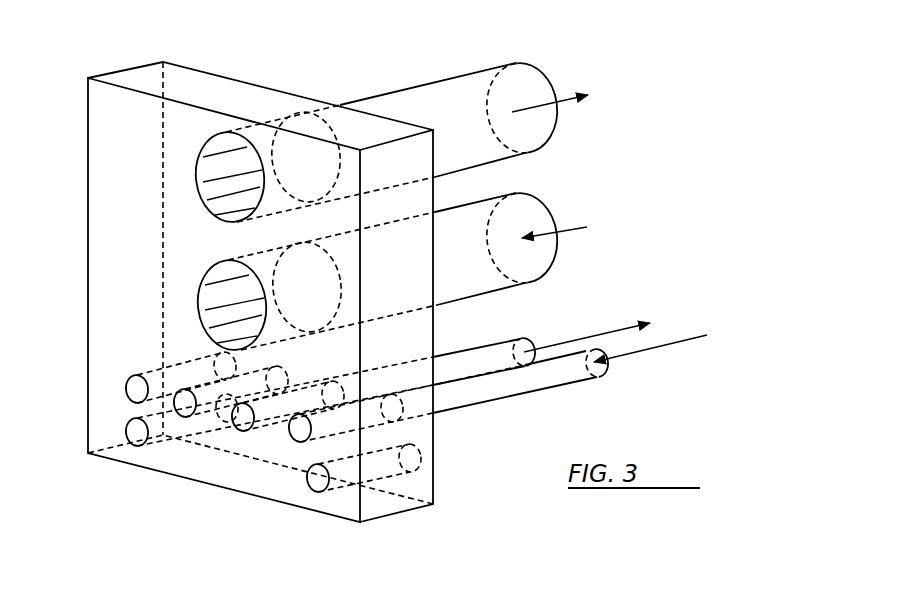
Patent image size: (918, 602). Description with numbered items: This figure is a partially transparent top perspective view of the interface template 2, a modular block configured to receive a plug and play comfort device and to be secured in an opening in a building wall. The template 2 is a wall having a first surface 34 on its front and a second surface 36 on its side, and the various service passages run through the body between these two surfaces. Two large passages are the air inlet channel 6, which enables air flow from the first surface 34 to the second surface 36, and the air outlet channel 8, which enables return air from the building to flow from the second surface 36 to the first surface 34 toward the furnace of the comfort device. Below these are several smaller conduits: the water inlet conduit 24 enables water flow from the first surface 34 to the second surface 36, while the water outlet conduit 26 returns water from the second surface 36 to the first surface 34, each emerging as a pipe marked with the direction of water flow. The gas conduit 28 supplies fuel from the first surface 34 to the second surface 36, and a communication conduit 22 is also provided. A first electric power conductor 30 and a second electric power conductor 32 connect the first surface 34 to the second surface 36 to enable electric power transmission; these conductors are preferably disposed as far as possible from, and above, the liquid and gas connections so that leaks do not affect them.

The interface template 2 is at (269, 267).
The air inlet channel 6 is at (533, 65).
The air outlet channel 8 is at (533, 193).
The communication conduit 22 is at (318, 478).
The water inlet conduit 24 is at (243, 417).
The water outlet conduit 26 is at (300, 428).
The gas conduit 28 is at (185, 403).
The first electric power conductor 30 is at (137, 390).
The second electric power conductor 32 is at (137, 432).
The first surface 34 is at (103, 133).
The second surface 36 is at (435, 447).